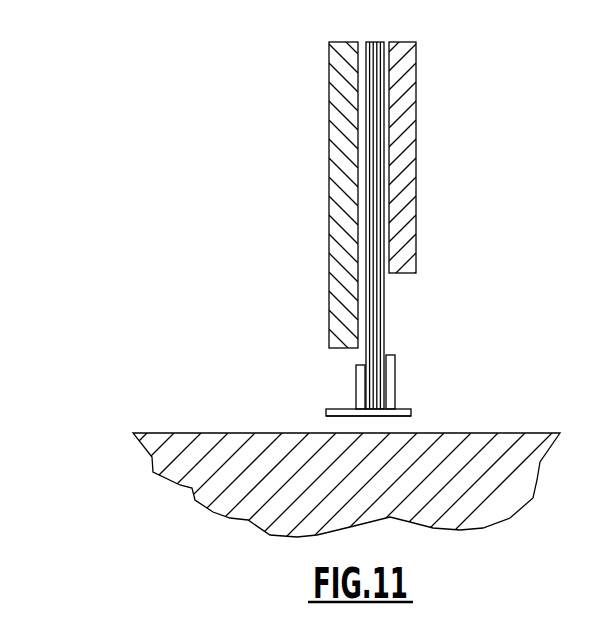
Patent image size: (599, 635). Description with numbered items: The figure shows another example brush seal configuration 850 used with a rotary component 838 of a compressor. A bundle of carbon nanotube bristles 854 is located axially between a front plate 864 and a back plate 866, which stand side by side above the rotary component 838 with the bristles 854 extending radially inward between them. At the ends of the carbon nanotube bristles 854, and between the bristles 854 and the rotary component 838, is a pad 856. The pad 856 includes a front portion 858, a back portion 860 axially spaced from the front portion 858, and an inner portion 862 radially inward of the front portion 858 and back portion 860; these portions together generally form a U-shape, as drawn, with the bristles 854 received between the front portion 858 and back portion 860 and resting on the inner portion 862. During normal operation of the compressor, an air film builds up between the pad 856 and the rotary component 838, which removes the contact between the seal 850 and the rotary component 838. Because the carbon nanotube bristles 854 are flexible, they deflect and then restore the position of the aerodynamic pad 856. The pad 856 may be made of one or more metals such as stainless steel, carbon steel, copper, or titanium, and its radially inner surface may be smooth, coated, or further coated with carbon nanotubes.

The brush seal configuration 850 is at (117, 178).
The front plate 864 is at (329, 128).
The back plate 866 is at (417, 125).
The carbon nanotube bristles 854 is at (385, 317).
The front portion 858 is at (356, 385).
The back portion 860 is at (396, 374).
The pad 856 is at (397, 399).
The inner portion 862 is at (393, 416).
The rotary component 838 is at (242, 432).